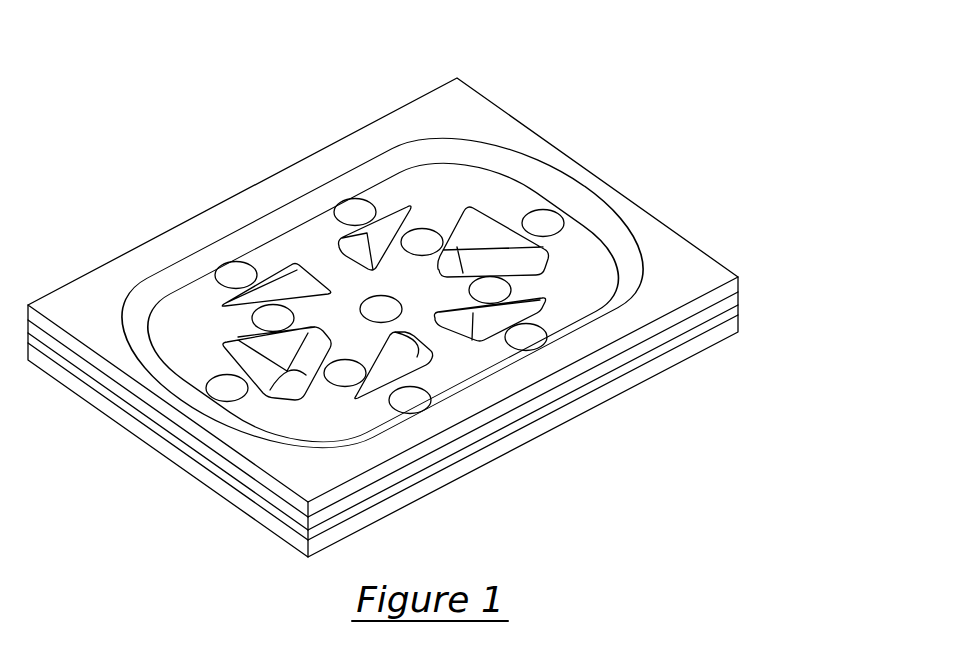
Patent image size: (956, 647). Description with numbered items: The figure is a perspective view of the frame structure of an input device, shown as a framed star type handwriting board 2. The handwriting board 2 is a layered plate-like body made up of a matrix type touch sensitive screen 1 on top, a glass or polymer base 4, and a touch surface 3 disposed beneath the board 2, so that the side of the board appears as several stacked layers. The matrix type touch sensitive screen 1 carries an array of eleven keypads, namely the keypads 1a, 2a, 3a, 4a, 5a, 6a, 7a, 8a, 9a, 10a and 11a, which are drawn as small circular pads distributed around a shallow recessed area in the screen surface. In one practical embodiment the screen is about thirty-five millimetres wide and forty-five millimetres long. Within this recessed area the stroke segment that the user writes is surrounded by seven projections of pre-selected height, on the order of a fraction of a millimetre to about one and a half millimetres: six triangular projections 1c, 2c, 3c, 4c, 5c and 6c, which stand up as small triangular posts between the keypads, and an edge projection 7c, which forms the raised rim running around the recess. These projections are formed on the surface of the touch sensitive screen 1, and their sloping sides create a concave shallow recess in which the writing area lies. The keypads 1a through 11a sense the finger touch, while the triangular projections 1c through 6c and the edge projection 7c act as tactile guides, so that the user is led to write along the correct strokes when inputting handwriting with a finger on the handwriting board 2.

The matrix type touch sensitive screen 1 is at (587, 257).
The framed star type handwriting board 2 is at (670, 255).
The touch surface 3 is at (728, 302).
The glass or polymer base 4 is at (700, 342).
The keypad 1a is at (556, 192).
The triangular projection 1c is at (485, 230).
The keypad 2a is at (353, 212).
The triangular projection 2c is at (387, 233).
The keypad 3a is at (423, 240).
The triangular projection 3c is at (510, 313).
The keypad 4a is at (545, 220).
The triangular projection 4c is at (300, 283).
The keypad 5a is at (527, 338).
The triangular projection 5c is at (410, 402).
The keypad 6a is at (383, 310).
The triangular projection 6c is at (233, 358).
The keypad 7a is at (237, 275).
The edge projection 7c is at (600, 207).
The keypad 8a is at (272, 318).
The keypad 9a is at (347, 376).
The keypad 10a is at (357, 403).
The keypad 11a is at (228, 388).